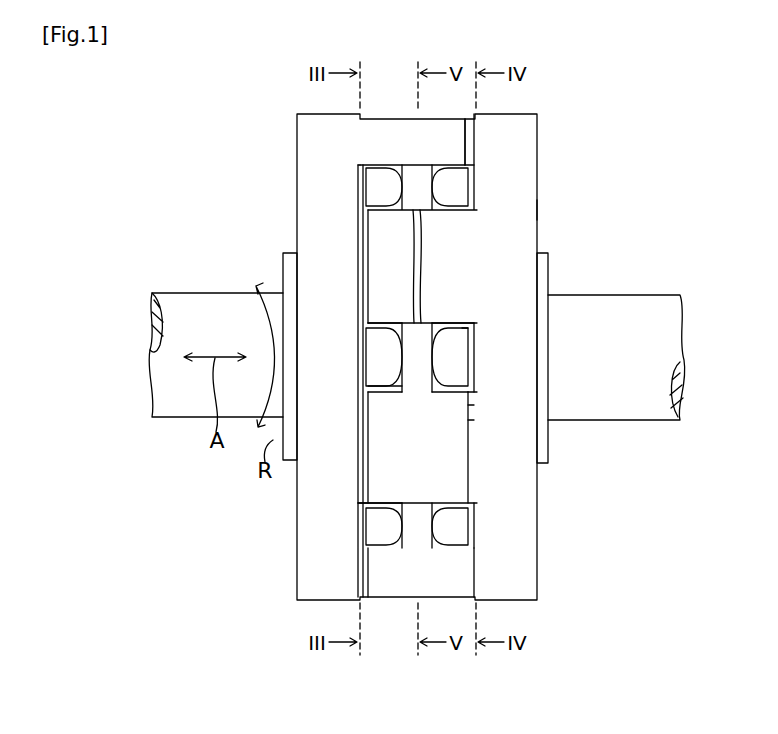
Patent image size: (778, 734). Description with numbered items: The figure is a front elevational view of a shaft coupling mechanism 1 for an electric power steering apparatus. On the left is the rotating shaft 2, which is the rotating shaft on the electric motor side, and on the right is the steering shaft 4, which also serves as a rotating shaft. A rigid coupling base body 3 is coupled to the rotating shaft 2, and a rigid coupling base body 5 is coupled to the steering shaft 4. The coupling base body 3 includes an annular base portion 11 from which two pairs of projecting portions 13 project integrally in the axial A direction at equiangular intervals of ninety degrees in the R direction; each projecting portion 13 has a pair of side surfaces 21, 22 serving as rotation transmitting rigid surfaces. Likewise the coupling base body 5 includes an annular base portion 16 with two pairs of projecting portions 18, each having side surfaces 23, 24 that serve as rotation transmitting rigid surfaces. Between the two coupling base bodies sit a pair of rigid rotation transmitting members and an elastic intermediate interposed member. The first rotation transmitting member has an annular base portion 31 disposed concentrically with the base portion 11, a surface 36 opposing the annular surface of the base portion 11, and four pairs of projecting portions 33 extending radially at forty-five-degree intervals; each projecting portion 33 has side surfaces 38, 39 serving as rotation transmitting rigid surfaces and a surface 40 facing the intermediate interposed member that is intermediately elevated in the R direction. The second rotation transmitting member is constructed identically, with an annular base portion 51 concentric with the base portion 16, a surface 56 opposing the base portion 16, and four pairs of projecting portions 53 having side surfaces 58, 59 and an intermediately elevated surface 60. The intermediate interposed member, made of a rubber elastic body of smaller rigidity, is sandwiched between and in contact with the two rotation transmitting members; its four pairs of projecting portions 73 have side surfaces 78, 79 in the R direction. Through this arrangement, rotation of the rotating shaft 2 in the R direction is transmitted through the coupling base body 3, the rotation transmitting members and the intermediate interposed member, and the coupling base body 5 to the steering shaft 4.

The shaft coupling mechanism 1 is at (603, 172).
The rotating shaft 2 is at (187, 300).
The coupling base body 3 is at (288, 508).
The steering shaft 4 is at (618, 315).
The coupling base body 5 is at (545, 238).
The annular base portion 11 is at (318, 162).
The projecting portions 13 is at (463, 143).
The annular base portion 16 is at (518, 208).
The projecting portions 18 is at (382, 258).
The side surface 21 is at (385, 384).
The side surface 22 is at (367, 513).
The side surface 23 is at (460, 198).
The side surface 24 is at (448, 330).
The annular base portion 31 is at (357, 297).
The projecting portions 33 is at (372, 175).
The surface 36 is at (357, 210).
The side surface 38 is at (378, 387).
The side surface 39 is at (360, 322).
The surface 40 is at (408, 163).
The annular base portion 51 is at (474, 422).
The projecting portions 53 is at (463, 175).
The surface 56 is at (473, 407).
The side surface 58 is at (471, 393).
The side surface 59 is at (470, 328).
The surface 60 is at (427, 193).
The projecting portions 73 is at (422, 193).
The side surface 78 is at (431, 393).
The side surface 79 is at (387, 295).